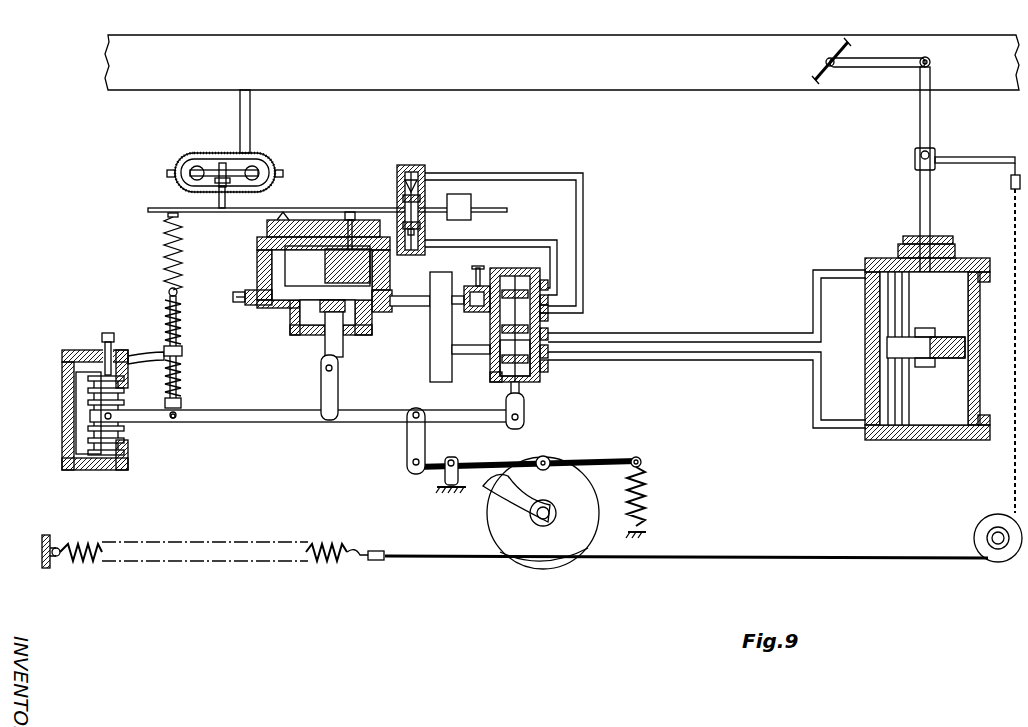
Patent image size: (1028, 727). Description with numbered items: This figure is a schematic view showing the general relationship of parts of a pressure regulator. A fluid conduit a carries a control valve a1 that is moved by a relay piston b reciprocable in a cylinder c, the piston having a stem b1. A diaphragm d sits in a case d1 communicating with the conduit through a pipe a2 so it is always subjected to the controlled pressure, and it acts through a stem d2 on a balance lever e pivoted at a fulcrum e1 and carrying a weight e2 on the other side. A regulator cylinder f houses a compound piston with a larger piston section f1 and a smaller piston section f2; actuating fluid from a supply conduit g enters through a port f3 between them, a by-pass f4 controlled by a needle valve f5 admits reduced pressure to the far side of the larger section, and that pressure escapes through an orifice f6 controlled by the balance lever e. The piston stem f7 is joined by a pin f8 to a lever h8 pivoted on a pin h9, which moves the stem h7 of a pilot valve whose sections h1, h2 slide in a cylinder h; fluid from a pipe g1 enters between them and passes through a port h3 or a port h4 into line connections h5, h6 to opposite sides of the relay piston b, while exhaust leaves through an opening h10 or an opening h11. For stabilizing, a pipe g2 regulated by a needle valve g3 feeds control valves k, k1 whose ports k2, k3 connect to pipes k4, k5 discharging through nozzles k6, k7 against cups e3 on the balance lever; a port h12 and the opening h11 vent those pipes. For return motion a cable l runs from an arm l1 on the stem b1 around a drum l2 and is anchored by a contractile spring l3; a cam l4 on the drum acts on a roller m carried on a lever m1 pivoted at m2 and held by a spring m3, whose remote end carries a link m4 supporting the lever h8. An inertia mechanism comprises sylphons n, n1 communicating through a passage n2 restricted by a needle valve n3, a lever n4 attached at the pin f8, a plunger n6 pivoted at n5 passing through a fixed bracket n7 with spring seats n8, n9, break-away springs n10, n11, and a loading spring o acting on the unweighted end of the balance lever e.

The fluid conduit a is at (688, 90).
The control valve a1 is at (816, 82).
The pipe a2 is at (250, 124).
The relay piston b is at (968, 345).
The piston stem b1 is at (920, 207).
The cylinder c is at (978, 402).
The diaphragm d is at (198, 158).
The case d1 is at (217, 165).
The stem d2 is at (220, 189).
The balance lever e is at (204, 212).
The fulcrum e1 is at (287, 214).
The weight e2 is at (472, 200).
The cups e3 is at (418, 190).
The regulator cylinder f is at (372, 320).
The larger piston section f1 is at (300, 265).
The smaller piston section f2 is at (320, 325).
The port f3 is at (380, 296).
The by-pass f4 is at (268, 290).
The needle valve f5 is at (273, 308).
The orifice f6 is at (355, 213).
The regulating piston stem f7 is at (338, 362).
The pin f8 is at (330, 422).
The conduit g is at (430, 347).
The pipe g1 is at (455, 365).
The pipe g2 is at (458, 298).
The needle valve g3 is at (478, 272).
The cylinder h is at (495, 370).
The pilot valve section h1 is at (520, 380).
The pilot valve section h2 is at (548, 335).
The port h3 is at (548, 365).
The port h4 is at (548, 350).
The line connection h5 is at (735, 360).
The line connection h6 is at (741, 330).
The pilot valve stem h7 is at (524, 412).
The lever h8 is at (373, 412).
The pin h9 is at (415, 412).
The opening h10 is at (500, 380).
The opening h11 is at (500, 320).
The port h12 is at (545, 275).
The control valve k is at (532, 280).
The control valve k1 is at (548, 305).
The port k2 is at (548, 295).
The port k3 is at (548, 313).
The pipe k4 is at (557, 248).
The pipe k5 is at (584, 207).
The nozzle k6 is at (425, 224).
The nozzle k7 is at (400, 195).
The cable l is at (843, 553).
The arm l1 is at (972, 162).
The drum l2 is at (588, 505).
The contractile spring l3 is at (332, 565).
The cam l4 is at (487, 500).
The roller m is at (548, 457).
The lever m1 is at (634, 458).
The pivot m2 is at (455, 458).
The spring m3 is at (645, 500).
The link m4 is at (408, 452).
The sylphon n is at (122, 437).
The sylphon n1 is at (122, 392).
The passage n2 is at (65, 392).
The needle valve n3 is at (105, 335).
The lever n4 is at (252, 422).
The pivot n5 is at (175, 418).
The plunger n6 is at (182, 378).
The fixed bracket n7 is at (148, 355).
The spring seat n8 is at (182, 350).
The spring seat n9 is at (182, 355).
The break-away spring n10 is at (182, 402).
The break-away spring n11 is at (178, 318).
The loading spring o is at (165, 258).